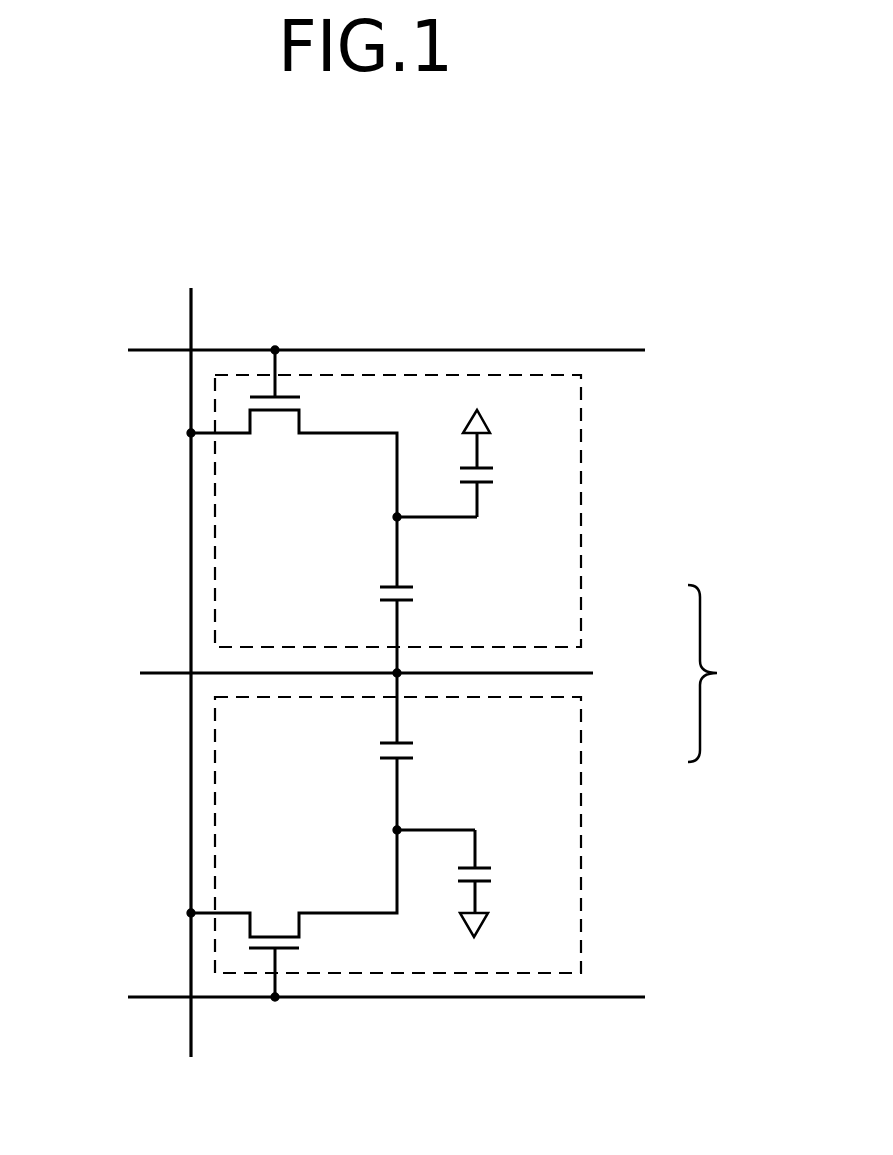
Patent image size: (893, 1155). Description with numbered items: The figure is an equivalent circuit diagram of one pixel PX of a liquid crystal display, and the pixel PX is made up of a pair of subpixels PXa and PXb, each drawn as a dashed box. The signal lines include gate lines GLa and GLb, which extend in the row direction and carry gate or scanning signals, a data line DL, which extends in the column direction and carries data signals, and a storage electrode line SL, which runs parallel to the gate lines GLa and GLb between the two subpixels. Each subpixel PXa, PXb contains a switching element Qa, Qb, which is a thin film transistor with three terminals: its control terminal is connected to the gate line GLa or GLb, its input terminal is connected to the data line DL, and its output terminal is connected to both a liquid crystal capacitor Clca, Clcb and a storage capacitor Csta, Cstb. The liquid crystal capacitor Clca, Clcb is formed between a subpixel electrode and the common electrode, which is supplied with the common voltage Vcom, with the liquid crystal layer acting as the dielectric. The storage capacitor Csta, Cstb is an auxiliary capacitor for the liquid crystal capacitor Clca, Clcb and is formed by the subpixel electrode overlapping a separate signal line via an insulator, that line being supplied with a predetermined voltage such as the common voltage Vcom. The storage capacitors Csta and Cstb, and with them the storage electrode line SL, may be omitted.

The data line DL is at (190, 657).
The gate line GLa is at (356, 350).
The gate line GLb is at (356, 995).
The storage electrode line SL is at (345, 673).
The switching element Qa is at (292, 431).
The switching element Qb is at (292, 915).
The liquid crystal capacitor Clca is at (478, 477).
The liquid crystal capacitor Clcb is at (476, 869).
The storage capacitor Csta is at (431, 595).
The storage capacitor Cstb is at (431, 749).
The common voltage Vcom is at (468, 675).
The subpixel PXa is at (581, 600).
The subpixel PXb is at (581, 742).
The pixel PX is at (722, 673).